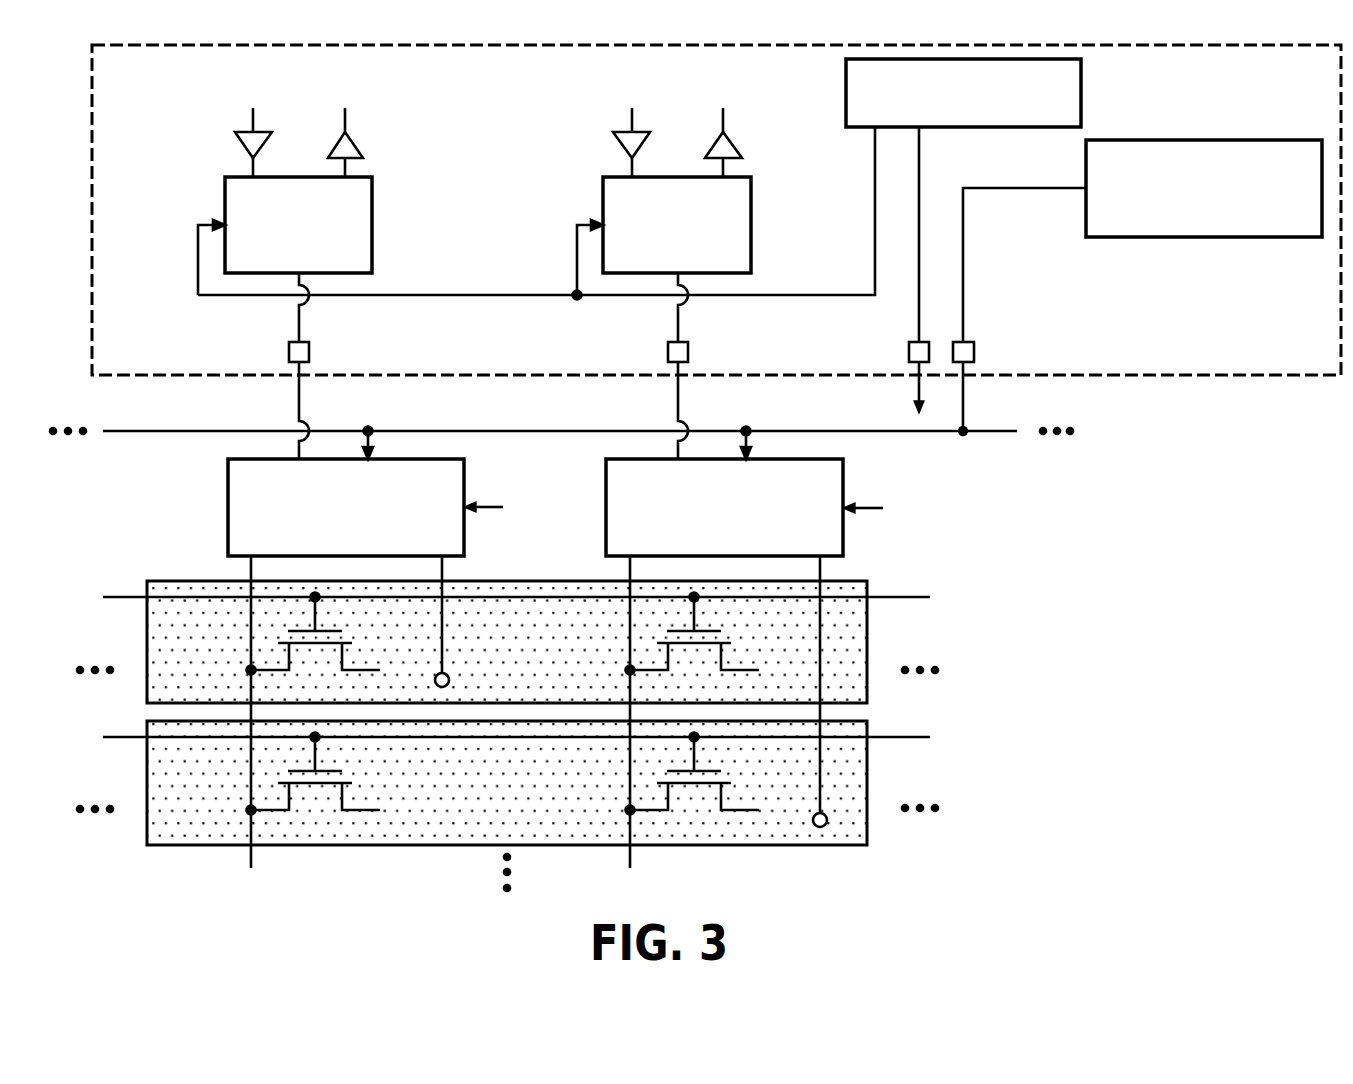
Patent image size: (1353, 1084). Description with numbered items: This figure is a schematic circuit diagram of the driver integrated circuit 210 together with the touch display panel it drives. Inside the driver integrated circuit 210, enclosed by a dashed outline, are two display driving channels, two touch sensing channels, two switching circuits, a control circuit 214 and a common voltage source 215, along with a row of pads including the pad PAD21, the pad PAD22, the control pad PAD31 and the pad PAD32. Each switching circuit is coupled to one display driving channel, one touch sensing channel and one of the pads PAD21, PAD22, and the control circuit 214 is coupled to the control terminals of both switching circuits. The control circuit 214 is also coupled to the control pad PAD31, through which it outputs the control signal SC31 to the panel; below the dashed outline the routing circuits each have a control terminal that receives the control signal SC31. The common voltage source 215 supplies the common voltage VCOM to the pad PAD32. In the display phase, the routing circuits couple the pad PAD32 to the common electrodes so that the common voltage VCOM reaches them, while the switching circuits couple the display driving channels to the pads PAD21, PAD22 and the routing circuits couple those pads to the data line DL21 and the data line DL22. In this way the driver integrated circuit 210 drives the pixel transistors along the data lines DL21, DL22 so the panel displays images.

The driver integrated circuit 210 is at (183, 377).
The control circuit 214 is at (1082, 93).
The common voltage source 215 is at (1237, 140).
The pad PAD21 is at (310, 350).
The pad PAD22 is at (689, 350).
The control pad PAD31 is at (908, 350).
The pad PAD32 is at (975, 350).
The common voltage VCOM is at (1050, 192).
The control signal SC31 is at (913, 388).
The data line DL21 is at (252, 857).
The data line DL22 is at (632, 857).